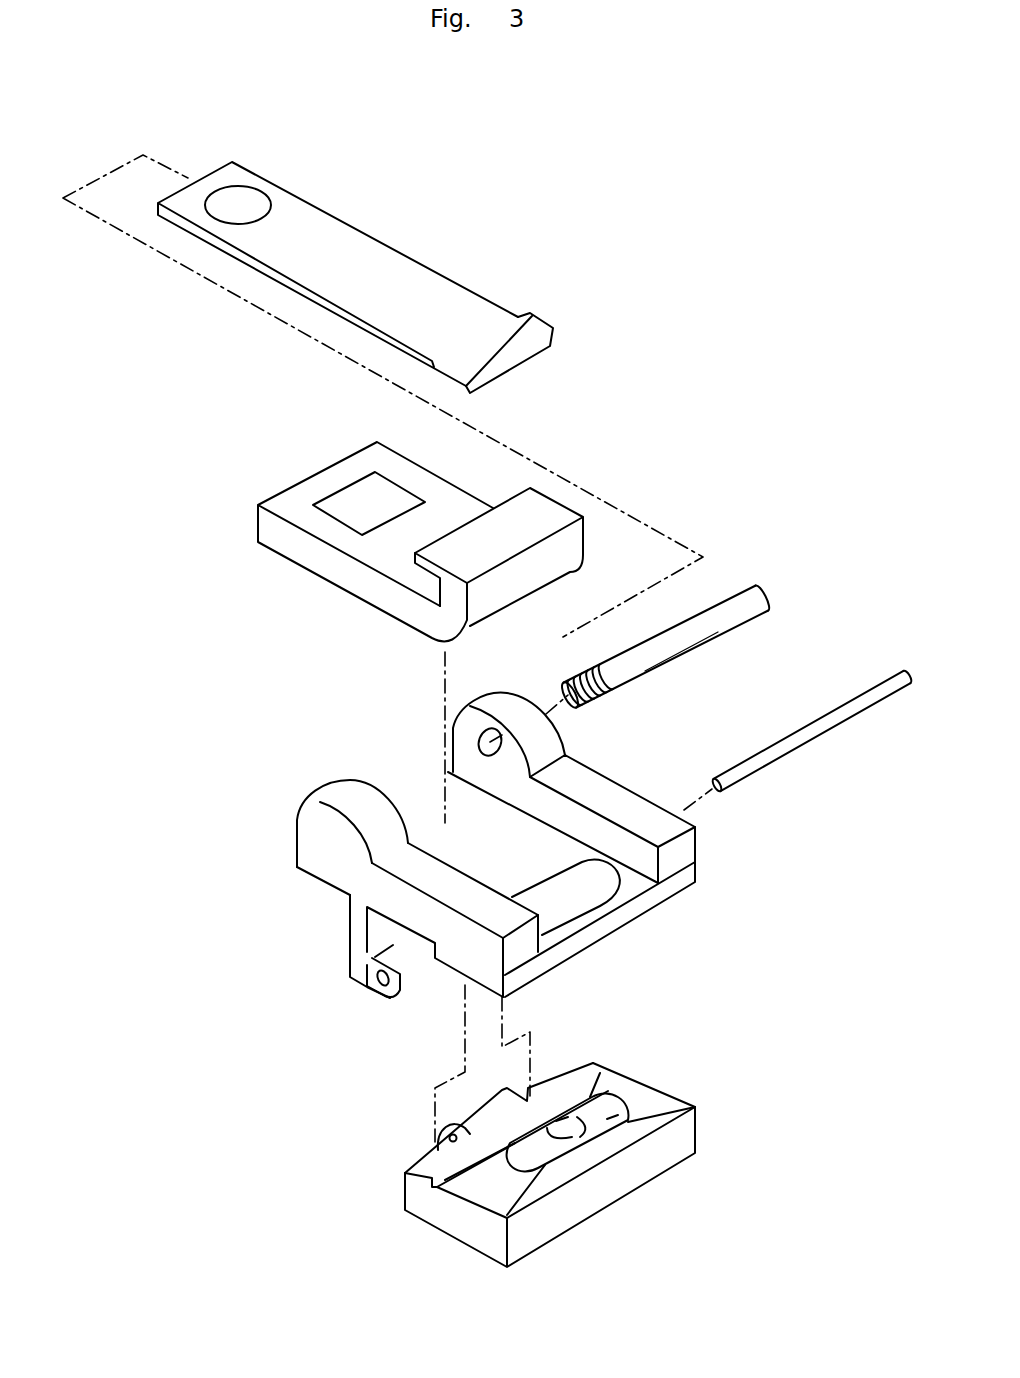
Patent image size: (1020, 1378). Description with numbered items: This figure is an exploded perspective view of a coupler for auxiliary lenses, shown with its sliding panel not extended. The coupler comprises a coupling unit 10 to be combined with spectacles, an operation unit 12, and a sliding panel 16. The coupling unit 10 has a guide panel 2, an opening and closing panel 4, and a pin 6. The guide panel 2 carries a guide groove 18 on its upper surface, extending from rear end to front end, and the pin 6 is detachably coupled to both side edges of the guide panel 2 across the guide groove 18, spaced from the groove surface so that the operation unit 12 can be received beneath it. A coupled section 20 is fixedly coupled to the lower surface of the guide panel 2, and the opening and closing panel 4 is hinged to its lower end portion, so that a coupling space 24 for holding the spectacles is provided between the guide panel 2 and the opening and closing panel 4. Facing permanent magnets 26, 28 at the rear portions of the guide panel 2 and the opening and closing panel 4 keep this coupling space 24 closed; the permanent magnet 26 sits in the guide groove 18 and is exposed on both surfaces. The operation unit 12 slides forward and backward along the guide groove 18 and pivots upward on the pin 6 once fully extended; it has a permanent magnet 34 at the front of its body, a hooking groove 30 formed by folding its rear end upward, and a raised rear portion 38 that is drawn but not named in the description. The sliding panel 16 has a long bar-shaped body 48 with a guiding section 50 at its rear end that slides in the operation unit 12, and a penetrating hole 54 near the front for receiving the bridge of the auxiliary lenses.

The guide panel 2 is at (449, 865).
The opening and closing panel 4 is at (560, 1132).
The pin 6 is at (683, 645).
The coupling unit 10 is at (742, 980).
The operation unit 12 is at (418, 541).
The sliding panel 16 is at (363, 250).
The guide groove 18 is at (490, 742).
The coupled section 20 is at (355, 930).
The coupling space 24 is at (367, 983).
The permanent magnet 26 is at (628, 900).
The permanent magnet 28 is at (565, 1130).
The hooking groove 30 is at (423, 590).
The permanent magnet 34 is at (350, 503).
The projection 38 is at (483, 620).
The body 48 is at (378, 260).
The guiding section 50 is at (528, 327).
The penetrating hole 54 is at (240, 207).